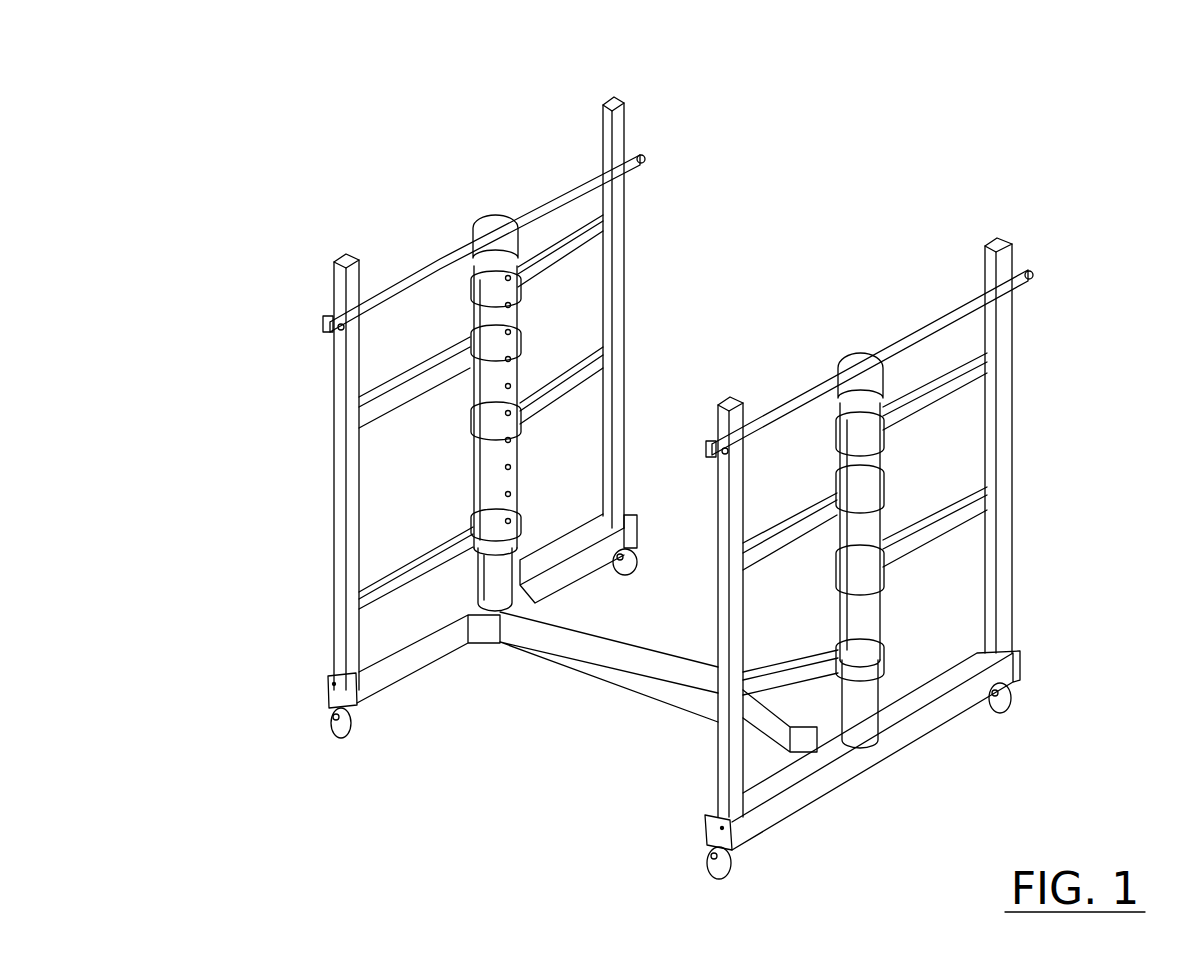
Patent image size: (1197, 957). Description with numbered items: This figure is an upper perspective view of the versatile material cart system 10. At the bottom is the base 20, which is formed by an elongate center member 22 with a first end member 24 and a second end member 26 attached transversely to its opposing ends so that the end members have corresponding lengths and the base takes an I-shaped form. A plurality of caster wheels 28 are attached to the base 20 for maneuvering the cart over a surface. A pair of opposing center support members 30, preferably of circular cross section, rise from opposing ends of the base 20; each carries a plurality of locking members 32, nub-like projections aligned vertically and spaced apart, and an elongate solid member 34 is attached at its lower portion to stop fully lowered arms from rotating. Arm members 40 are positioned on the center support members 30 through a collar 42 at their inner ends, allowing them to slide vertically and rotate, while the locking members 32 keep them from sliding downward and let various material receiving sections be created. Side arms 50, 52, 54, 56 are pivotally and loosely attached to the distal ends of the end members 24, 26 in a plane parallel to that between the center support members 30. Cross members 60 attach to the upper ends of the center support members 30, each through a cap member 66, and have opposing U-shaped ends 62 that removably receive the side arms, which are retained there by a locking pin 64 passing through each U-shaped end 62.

The versatile material cart system 10 is at (992, 156).
The base 20 is at (568, 675).
The center member 22 is at (672, 690).
The first end member 24 is at (785, 810).
The second end member 26 is at (427, 658).
The caster wheels 28 is at (334, 722).
The center support members 30 is at (518, 322).
The locking members 32 is at (520, 277).
The elongate solid member 34 is at (518, 576).
The arm members 40 is at (585, 355).
The collar 42 is at (524, 450).
The side arm 50 is at (990, 240).
The side arm 52 is at (735, 397).
The side arm 54 is at (625, 128).
The side arm 56 is at (333, 383).
The cross members 60 is at (413, 273).
The U-shaped ends 62 is at (1022, 281).
The locking pin 64 is at (1027, 282).
The cap member 66 is at (487, 232).